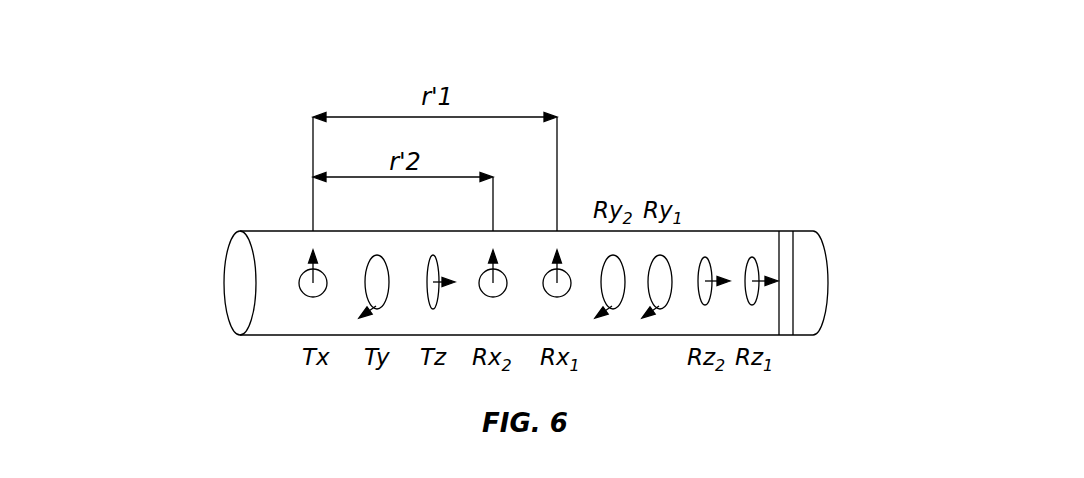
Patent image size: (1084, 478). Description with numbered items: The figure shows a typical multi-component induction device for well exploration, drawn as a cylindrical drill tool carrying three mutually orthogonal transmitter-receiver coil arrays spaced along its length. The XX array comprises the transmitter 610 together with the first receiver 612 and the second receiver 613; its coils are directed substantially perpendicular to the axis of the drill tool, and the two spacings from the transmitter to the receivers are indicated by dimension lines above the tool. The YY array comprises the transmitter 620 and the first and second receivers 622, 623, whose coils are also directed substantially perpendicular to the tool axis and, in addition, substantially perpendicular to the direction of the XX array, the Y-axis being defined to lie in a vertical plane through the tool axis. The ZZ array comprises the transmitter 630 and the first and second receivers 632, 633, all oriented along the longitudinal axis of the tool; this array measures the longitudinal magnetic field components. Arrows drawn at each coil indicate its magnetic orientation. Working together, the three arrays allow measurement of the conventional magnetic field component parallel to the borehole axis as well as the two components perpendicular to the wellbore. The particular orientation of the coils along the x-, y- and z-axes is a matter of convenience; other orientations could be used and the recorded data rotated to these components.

The transmitter Tx 610 is at (299, 283).
The transmitter Ty 620 is at (378, 257).
The transmitter Tz 630 is at (433, 303).
The receiver Rx2 613 is at (493, 297).
The receiver Rx1 612 is at (566, 271).
The receiver Ry2 623 is at (612, 302).
The receiver Ry1 622 is at (660, 256).
The receiver Rz2 633 is at (705, 305).
The receiver Rz1 632 is at (752, 257).